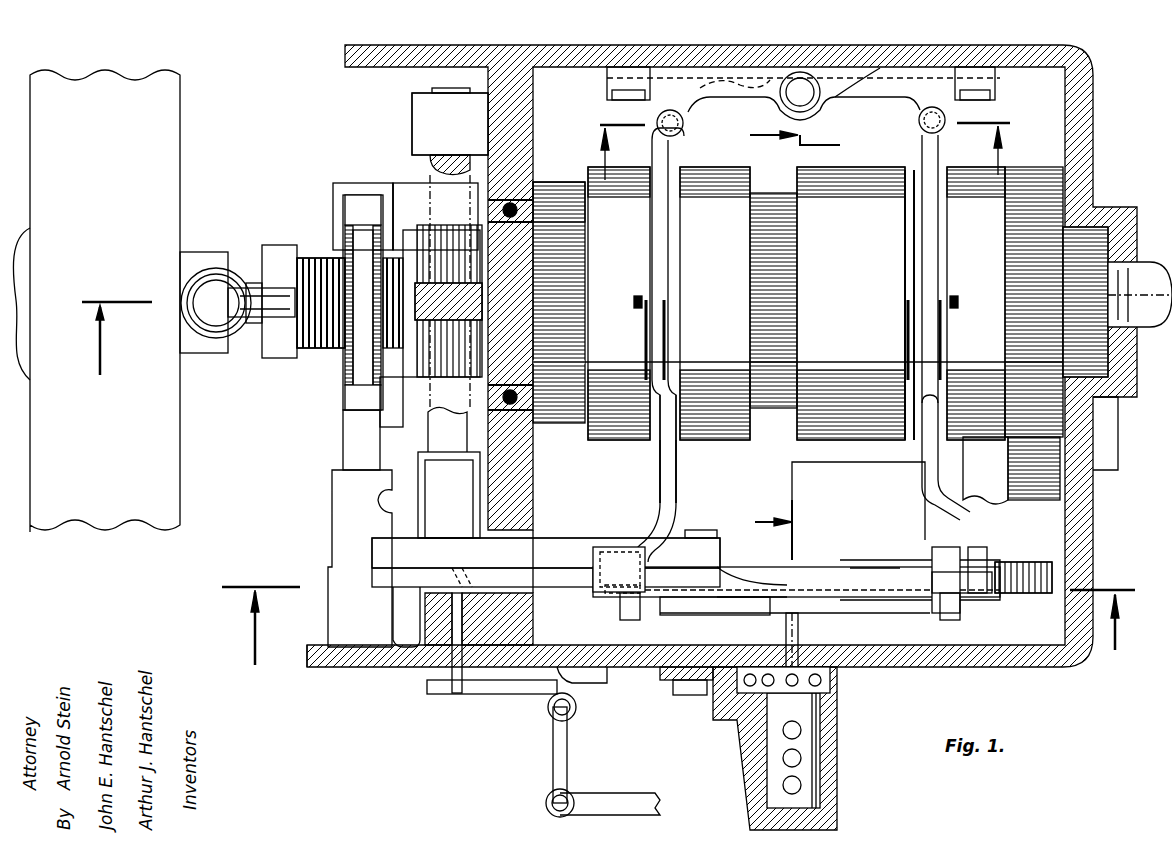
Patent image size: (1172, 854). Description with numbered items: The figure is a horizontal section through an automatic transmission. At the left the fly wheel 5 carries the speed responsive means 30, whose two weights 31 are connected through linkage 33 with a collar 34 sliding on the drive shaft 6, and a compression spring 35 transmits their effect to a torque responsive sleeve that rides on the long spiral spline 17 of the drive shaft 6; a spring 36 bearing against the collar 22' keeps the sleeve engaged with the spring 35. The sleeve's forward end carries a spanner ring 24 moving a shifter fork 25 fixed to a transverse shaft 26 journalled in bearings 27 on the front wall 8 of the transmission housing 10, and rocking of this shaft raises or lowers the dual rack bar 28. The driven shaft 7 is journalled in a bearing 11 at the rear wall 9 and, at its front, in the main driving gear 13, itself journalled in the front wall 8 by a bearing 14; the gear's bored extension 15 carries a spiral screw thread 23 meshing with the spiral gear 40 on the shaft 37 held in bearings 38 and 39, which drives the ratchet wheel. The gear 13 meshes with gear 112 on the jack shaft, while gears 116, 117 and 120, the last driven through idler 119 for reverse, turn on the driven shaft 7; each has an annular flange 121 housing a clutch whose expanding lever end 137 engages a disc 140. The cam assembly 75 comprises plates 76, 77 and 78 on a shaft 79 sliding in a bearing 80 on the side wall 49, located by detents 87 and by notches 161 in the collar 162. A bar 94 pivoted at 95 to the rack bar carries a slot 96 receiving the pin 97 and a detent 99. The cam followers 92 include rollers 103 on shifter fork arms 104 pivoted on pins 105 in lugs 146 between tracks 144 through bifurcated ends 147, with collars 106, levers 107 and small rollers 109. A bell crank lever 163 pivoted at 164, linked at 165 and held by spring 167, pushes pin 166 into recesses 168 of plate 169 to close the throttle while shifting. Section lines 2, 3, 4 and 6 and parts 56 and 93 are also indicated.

The fly wheel 5 is at (106, 160).
The driven shaft 7 is at (1146, 272).
The front wall 8 is at (492, 118).
The rear wall 9 is at (1080, 168).
The transmission housing 10 is at (1092, 528).
The bearing 11 is at (1090, 232).
The main driving gear 13 is at (585, 276).
The bearing 14 is at (510, 388).
The bored extension 15 is at (420, 372).
The spiral spline 17 is at (322, 345).
The collar 22' is at (393, 407).
The spiral screw thread 23 is at (418, 232).
The spanner ring 24 is at (340, 226).
The shifter fork 25 is at (358, 200).
The transverse shaft 26 is at (340, 432).
The bearings 27 is at (330, 186).
The dual rack bar 28 is at (562, 538).
The speed responsive means 30 is at (212, 242).
The weights 31 is at (216, 303).
The linkage 33 is at (250, 280).
The collar 34 is at (274, 258).
The compression spring 35 is at (314, 262).
The spring 36 is at (398, 346).
The shaft 37 is at (456, 446).
The bearing 38 is at (410, 105).
The bearing 39 is at (456, 515).
The spiral gear 40 is at (478, 296).
The side wall 49 is at (372, 672).
The bracket 56 is at (342, 507).
The cam assembly 75 is at (858, 550).
The automatic cam plate 76 is at (768, 558).
The plate 77 is at (780, 580).
The manual cam plate 78 is at (736, 608).
The shaft 79 is at (766, 776).
The bearing 80 is at (840, 750).
The detents 87 is at (792, 740).
The cam followers 92 is at (650, 545).
The lever arm 93 is at (684, 452).
The bar 94 is at (770, 530).
The pivotal connection 95 is at (712, 514).
The vertical slot 96 is at (842, 562).
The pin 97 is at (792, 640).
The detent 99 is at (1026, 594).
The rollers 103 is at (604, 583).
The shifter fork arms 104 is at (658, 460).
The pivot pins 105 is at (684, 134).
The collars 106 is at (648, 508).
The levers 107 is at (605, 596).
The small rollers 109 is at (590, 552).
The gear 112 is at (568, 186).
The gear 116 is at (782, 192).
The gear 117 is at (866, 115).
The idler 119 is at (1020, 474).
The gear 120 is at (1050, 172).
The annular flanges 121 is at (622, 256).
The outer end of expanding lever 137 is at (636, 304).
The disc 140 is at (642, 348).
The tracks 144 is at (900, 110).
The bored lugs 146 is at (656, 114).
The bifurcated end portions 147 is at (920, 132).
The detent notches 161 is at (740, 715).
The collar 162 is at (830, 618).
The bell crank lever 163 is at (552, 762).
The pivot 164 is at (578, 712).
The link 165 is at (640, 795).
The pin 166 is at (448, 668).
The spring 167 is at (588, 680).
The recesses 168 is at (480, 560).
The plate 169 is at (390, 588).
The section line 2- 2 is at (609, 328).
The section line 3- 3 is at (678, 614).
The section line 4- 4 is at (795, 340).
The drive shaft 6 is at (256, 328).